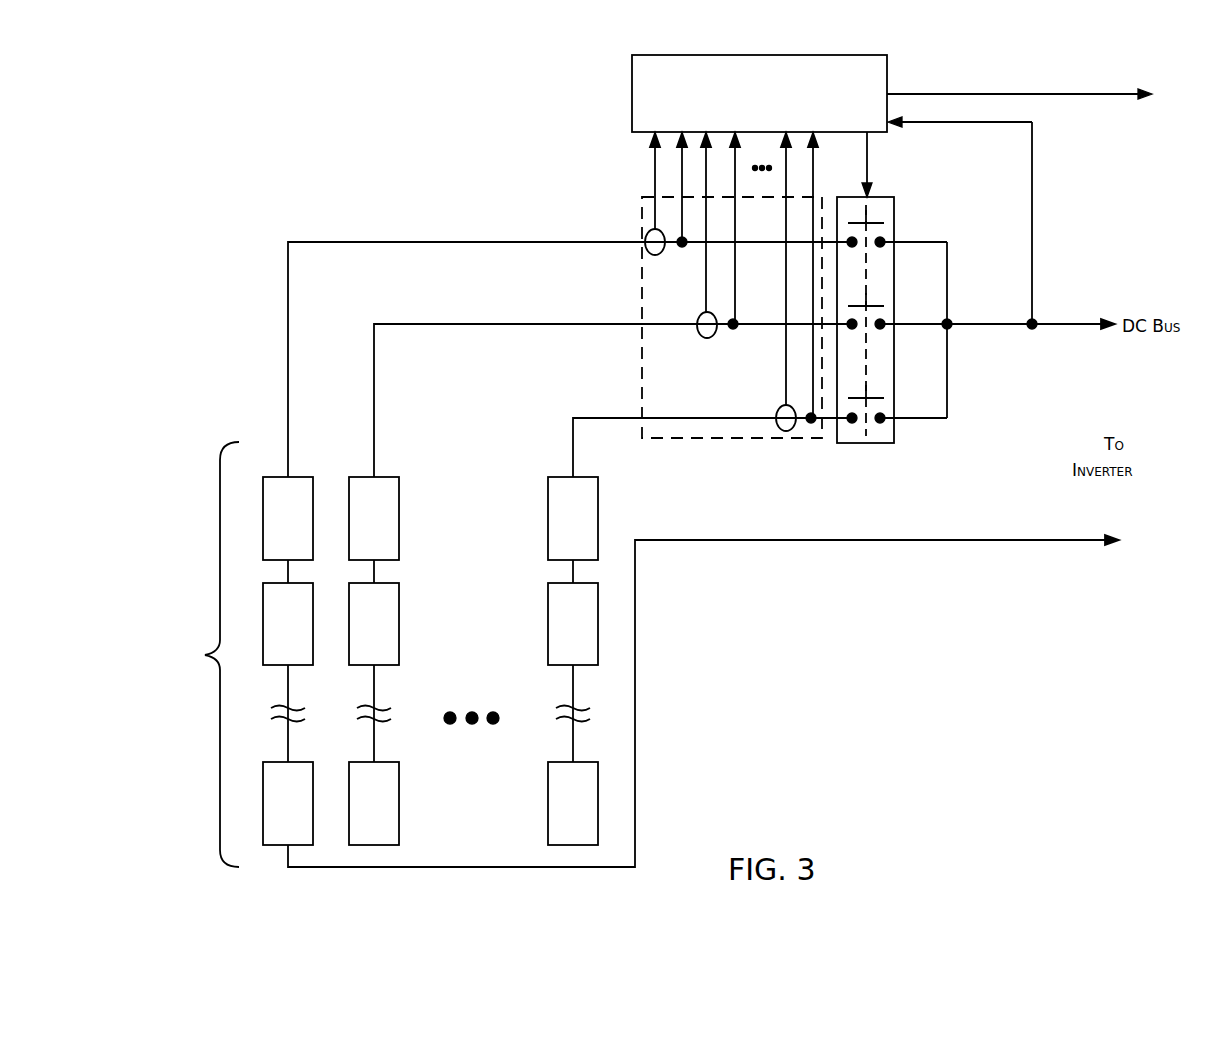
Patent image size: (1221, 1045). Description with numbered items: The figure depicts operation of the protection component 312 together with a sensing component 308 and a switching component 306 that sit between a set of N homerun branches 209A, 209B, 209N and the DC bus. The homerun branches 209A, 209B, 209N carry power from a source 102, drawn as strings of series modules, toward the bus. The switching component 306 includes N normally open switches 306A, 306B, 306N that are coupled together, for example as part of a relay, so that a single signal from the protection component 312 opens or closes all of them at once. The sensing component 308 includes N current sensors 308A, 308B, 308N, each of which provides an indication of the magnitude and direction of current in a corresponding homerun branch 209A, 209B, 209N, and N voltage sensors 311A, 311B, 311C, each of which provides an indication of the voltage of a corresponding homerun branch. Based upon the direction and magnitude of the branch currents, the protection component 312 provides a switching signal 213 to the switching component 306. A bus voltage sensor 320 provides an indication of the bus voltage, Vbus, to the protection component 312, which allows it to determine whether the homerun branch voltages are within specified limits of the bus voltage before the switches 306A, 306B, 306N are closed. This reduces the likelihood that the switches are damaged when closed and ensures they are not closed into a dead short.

The power source (photovoltaic strings) 102 is at (635, 654).
The homerun branch 209A is at (446, 242).
The homerun branch 209B is at (466, 324).
The homerun branch 209N is at (583, 418).
The switching signal 213 is at (870, 178).
The switching component 306 is at (896, 440).
The normally open switch 306A is at (872, 218).
The normally open switch 306B is at (872, 300).
The normally open switch 306N is at (872, 392).
The sensing component 308 is at (641, 352).
The current sensor 308A is at (648, 232).
The current sensor 308B is at (707, 338).
The current sensor 308N is at (780, 408).
The voltage sensor 311A is at (681, 250).
The voltage sensor 311B is at (734, 330).
The voltage sensor 311C is at (812, 423).
The protection component 312 is at (892, 236).
The bus voltage sensor 320 is at (1035, 318).